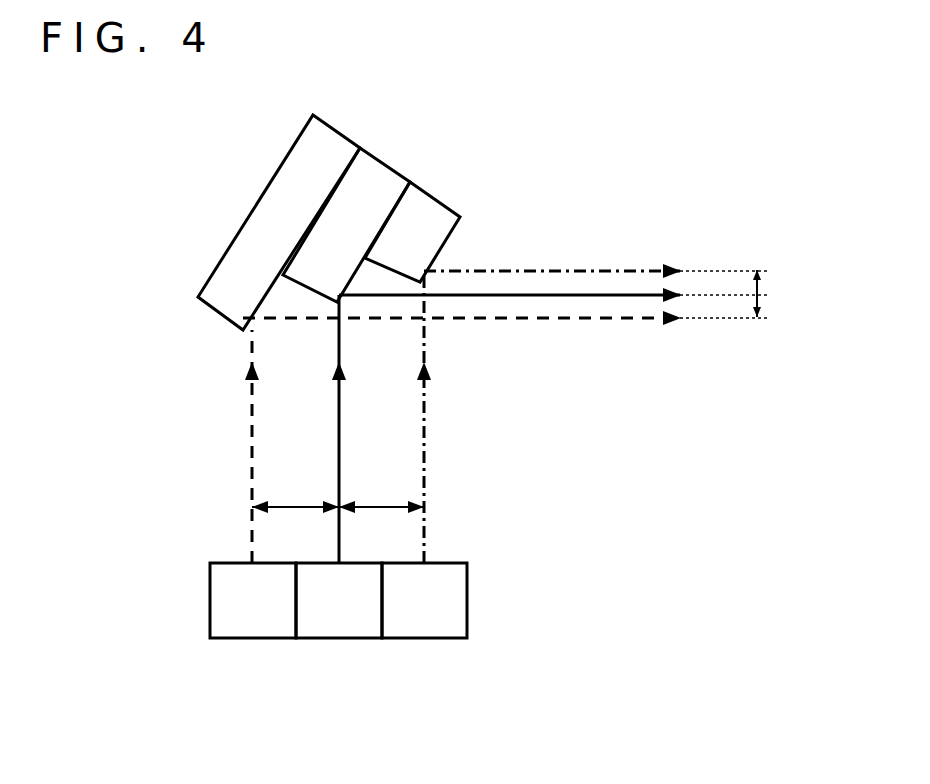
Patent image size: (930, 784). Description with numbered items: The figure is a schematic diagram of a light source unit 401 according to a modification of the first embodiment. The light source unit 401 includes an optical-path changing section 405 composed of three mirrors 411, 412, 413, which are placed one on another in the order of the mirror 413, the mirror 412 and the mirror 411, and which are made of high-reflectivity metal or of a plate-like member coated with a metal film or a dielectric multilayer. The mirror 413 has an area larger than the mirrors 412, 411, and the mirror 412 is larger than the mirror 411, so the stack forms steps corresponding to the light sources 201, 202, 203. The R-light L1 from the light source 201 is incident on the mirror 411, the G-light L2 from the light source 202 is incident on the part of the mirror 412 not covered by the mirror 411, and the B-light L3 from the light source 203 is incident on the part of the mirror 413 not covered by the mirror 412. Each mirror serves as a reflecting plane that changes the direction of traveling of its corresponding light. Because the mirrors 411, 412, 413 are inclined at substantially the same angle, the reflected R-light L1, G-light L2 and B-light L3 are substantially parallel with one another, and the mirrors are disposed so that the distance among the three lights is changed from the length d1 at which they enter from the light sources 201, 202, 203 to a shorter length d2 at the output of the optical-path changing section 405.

The light source unit 401 is at (375, 205).
The optical-path changing section 405 is at (390, 205).
The mirror 411 is at (423, 200).
The mirror 412 is at (380, 167).
The mirror 413 is at (330, 134).
The light source 201 is at (423, 638).
The light source 202 is at (340, 638).
The light source 203 is at (255, 638).
The R-light L1 is at (424, 530).
The G-light L2 is at (339, 433).
The B-light L3 is at (252, 528).
The length d1 is at (338, 497).
The length d2 is at (758, 306).